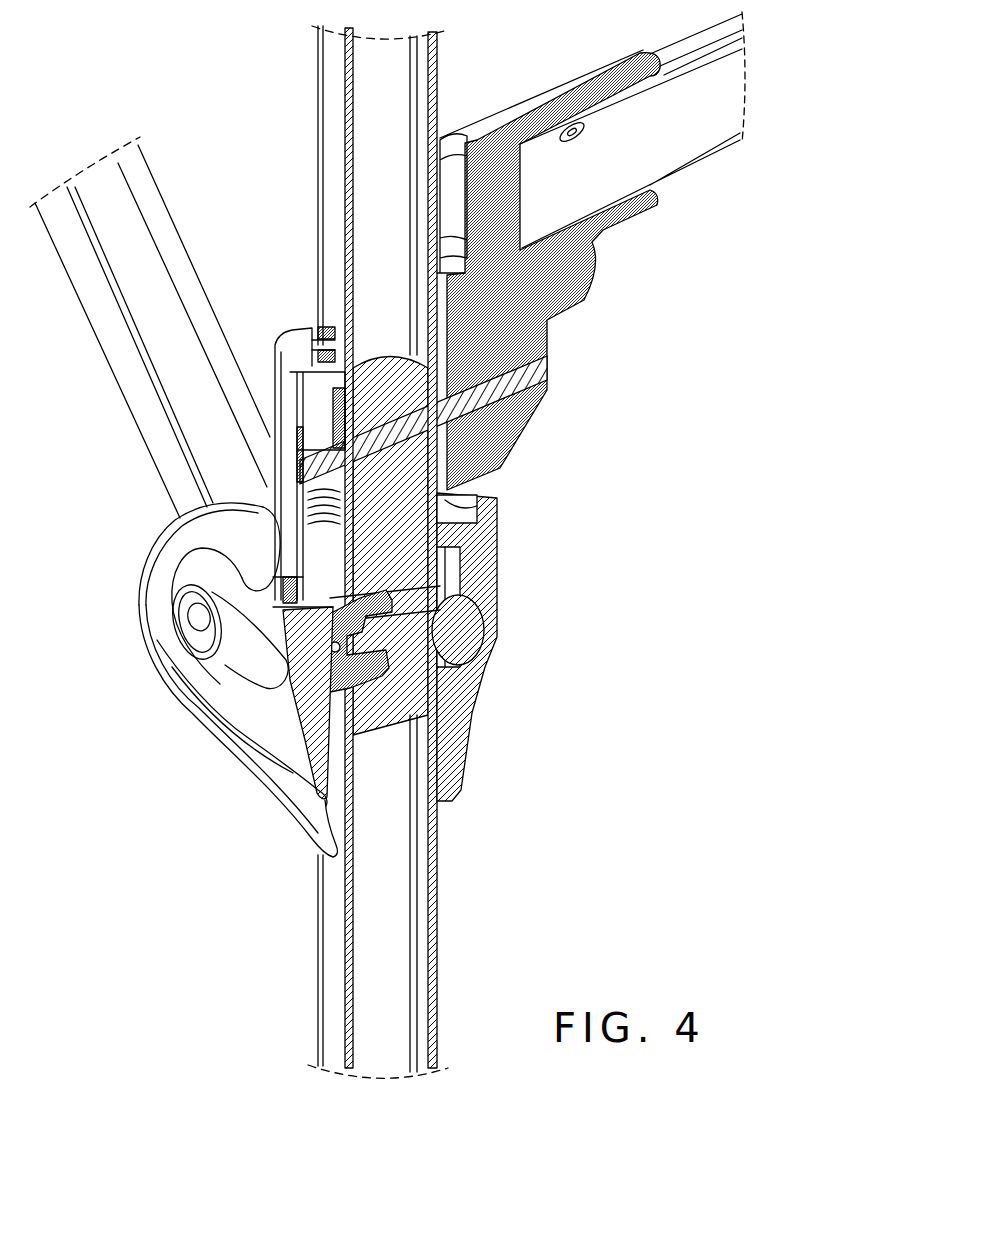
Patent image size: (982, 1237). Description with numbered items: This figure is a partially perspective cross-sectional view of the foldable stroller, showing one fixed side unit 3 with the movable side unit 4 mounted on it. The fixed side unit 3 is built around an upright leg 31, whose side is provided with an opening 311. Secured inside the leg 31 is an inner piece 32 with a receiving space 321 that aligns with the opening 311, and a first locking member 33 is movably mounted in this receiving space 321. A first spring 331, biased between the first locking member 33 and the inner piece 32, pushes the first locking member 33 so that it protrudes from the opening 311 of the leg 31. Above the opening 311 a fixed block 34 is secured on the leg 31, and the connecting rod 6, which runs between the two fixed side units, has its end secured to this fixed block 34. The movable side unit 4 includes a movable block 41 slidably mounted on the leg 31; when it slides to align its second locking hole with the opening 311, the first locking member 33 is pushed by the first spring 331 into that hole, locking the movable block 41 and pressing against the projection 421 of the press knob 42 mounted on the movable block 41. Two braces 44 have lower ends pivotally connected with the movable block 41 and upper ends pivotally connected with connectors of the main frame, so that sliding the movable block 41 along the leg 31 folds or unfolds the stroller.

The fixed side unit 3 is at (446, 545).
The leg 31 is at (330, 81).
The opening 311 is at (323, 717).
The inner piece 32 is at (387, 722).
The receiving space 321 is at (398, 655).
The first locking member 33 is at (430, 597).
The first spring 331 is at (400, 647).
The fixed block 34 is at (558, 272).
The movable side unit 4 is at (183, 550).
The movable block 41 is at (172, 667).
The press knob 42 is at (255, 740).
The projection 421 is at (260, 737).
The brace 44 is at (153, 268).
The connecting rod 6 is at (693, 160).